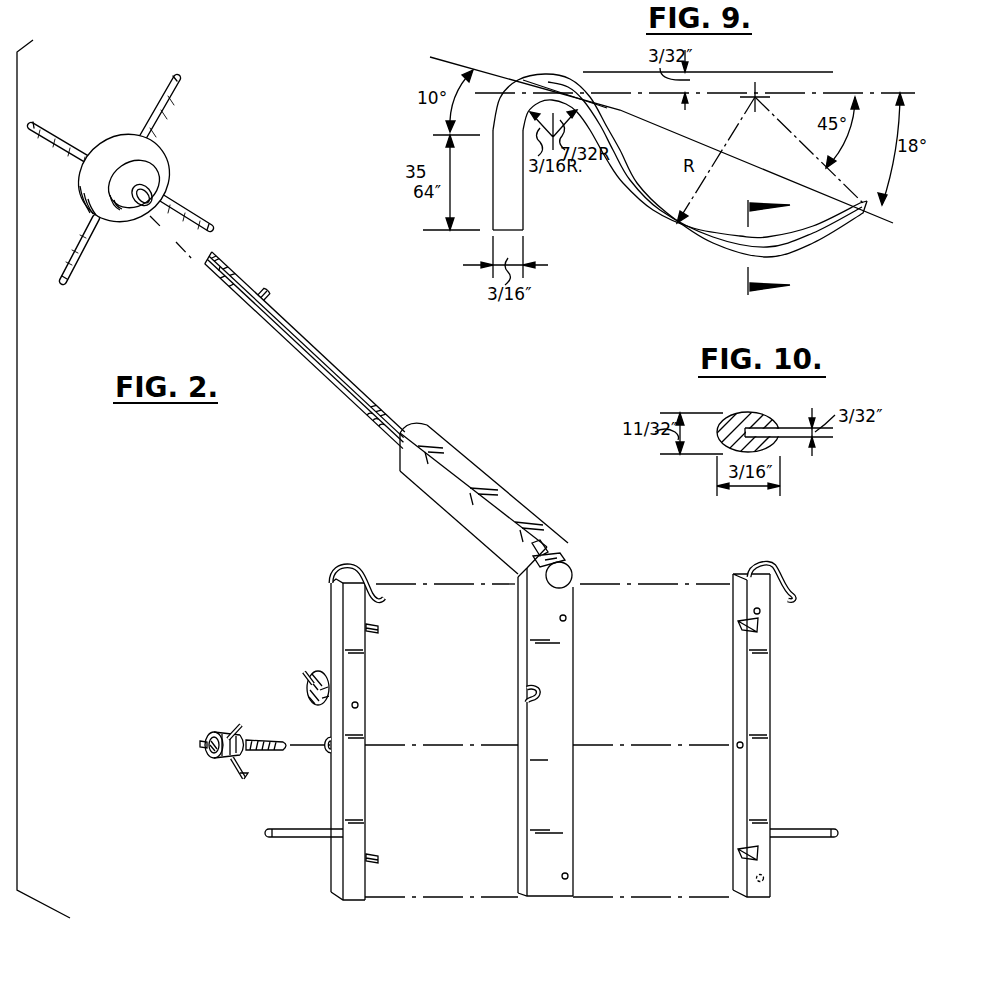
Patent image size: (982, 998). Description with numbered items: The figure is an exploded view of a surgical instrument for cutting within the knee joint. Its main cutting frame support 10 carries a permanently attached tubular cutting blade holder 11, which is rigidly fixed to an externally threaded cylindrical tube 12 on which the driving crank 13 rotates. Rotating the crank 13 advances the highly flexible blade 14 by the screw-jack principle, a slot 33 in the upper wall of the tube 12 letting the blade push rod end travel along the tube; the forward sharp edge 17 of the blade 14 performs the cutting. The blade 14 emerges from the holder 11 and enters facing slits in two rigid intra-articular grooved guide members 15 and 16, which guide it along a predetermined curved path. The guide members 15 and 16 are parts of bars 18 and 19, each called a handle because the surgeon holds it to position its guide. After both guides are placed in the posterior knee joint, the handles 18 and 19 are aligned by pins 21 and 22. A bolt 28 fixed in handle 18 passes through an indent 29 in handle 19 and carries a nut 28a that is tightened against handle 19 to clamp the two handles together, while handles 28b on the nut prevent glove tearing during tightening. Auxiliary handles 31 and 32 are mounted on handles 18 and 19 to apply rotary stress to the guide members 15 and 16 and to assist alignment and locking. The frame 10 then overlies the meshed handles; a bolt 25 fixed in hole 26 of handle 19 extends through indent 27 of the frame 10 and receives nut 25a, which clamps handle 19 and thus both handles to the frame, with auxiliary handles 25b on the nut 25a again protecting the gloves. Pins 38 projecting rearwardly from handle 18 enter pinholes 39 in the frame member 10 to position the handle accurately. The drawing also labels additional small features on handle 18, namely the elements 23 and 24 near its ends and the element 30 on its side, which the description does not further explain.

In FIG. 2, the main cutting frame support 10 is at (415, 574).
In FIG. 9, the main cutting frame support 10 is at (680, 199).
In FIG. 2, the tubular cutting blade holder 11 is at (463, 473).
In FIG. 2, the cylindrical tube 12 is at (308, 350).
In FIG. 2, the driving crank 13 is at (150, 153).
In FIG. 2, the blade 14 is at (564, 566).
In FIG. 2, the grooved guide member 15 is at (790, 592).
In FIG. 2, the grooved guide member 16 is at (375, 600).
In FIG. 2, the sharp edge 17 is at (553, 721).
In FIG. 2, the handle 18 is at (762, 725).
In FIG. 2, the handle 19 is at (355, 726).
In FIG. 2, the pin 21 is at (378, 627).
In FIG. 2, the pin 22 is at (372, 856).
In FIG. 2, the clip 23 is at (738, 622).
In FIG. 2, the clip 24 is at (738, 852).
In FIG. 2, the bolt 25 is at (289, 676).
In FIG. 2, the nut 25a is at (325, 700).
In FIG. 2, the auxiliary handles 25b is at (306, 675).
In FIG. 2, the hole 26 is at (358, 705).
In FIG. 2, the indent 27 is at (522, 692).
In FIG. 2, the bolt 28 is at (224, 753).
In FIG. 2, the nut 28a is at (210, 756).
In FIG. 2, the handles 28b is at (233, 770).
In FIG. 2, the indent 29 is at (328, 745).
In FIG. 2, the hole 30 is at (739, 749).
In FIG. 2, the auxiliary handle 31 is at (806, 830).
In FIG. 2, the auxiliary handle 32 is at (295, 832).
In FIG. 2, the slot 33 is at (278, 312).
In FIG. 2, the pins 38 is at (762, 611).
In FIG. 2, the pinholes 39 is at (567, 620).